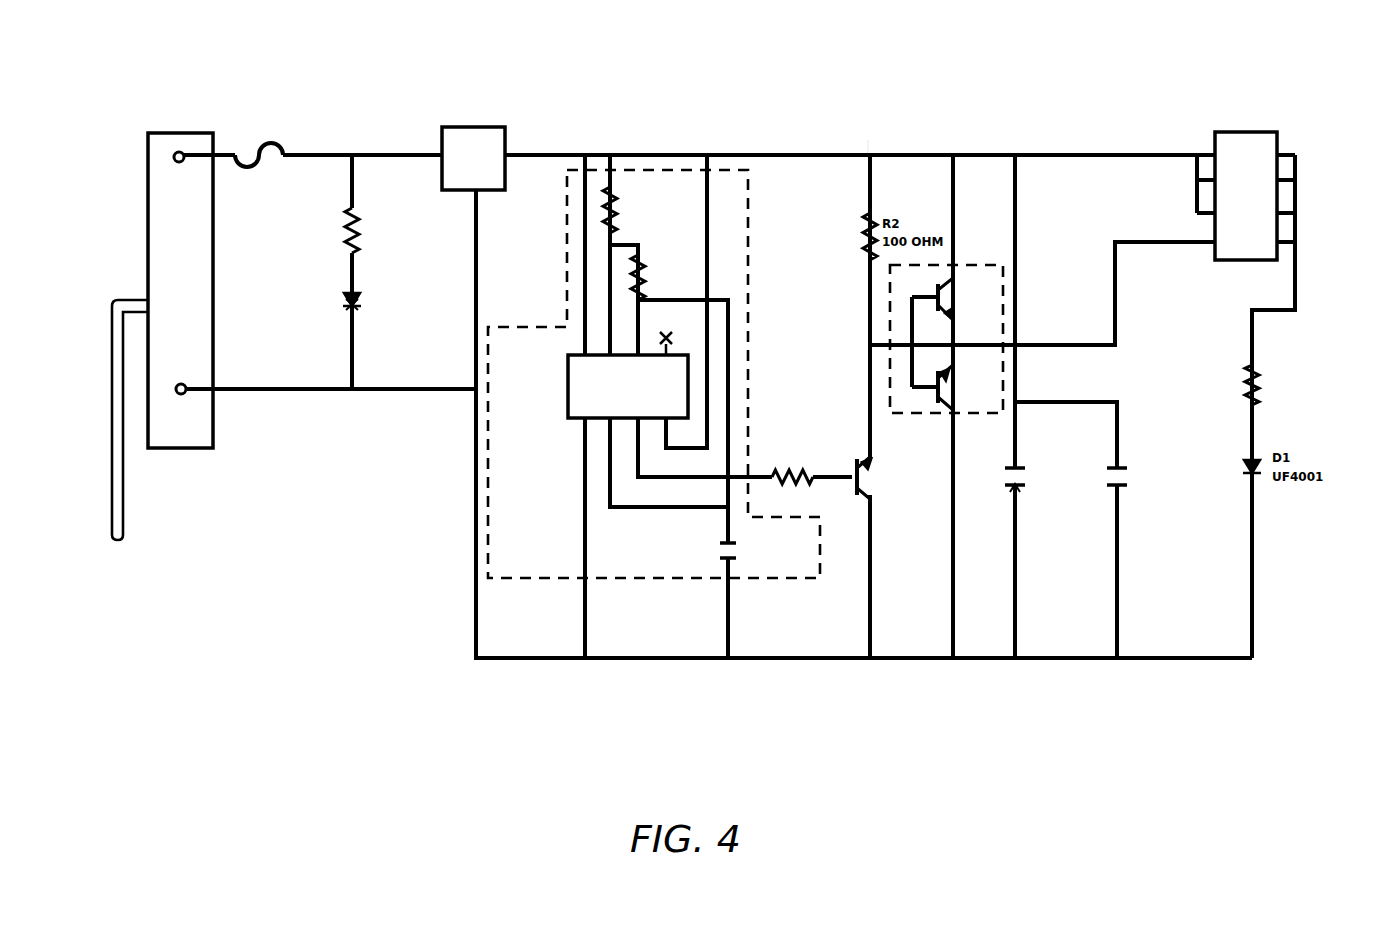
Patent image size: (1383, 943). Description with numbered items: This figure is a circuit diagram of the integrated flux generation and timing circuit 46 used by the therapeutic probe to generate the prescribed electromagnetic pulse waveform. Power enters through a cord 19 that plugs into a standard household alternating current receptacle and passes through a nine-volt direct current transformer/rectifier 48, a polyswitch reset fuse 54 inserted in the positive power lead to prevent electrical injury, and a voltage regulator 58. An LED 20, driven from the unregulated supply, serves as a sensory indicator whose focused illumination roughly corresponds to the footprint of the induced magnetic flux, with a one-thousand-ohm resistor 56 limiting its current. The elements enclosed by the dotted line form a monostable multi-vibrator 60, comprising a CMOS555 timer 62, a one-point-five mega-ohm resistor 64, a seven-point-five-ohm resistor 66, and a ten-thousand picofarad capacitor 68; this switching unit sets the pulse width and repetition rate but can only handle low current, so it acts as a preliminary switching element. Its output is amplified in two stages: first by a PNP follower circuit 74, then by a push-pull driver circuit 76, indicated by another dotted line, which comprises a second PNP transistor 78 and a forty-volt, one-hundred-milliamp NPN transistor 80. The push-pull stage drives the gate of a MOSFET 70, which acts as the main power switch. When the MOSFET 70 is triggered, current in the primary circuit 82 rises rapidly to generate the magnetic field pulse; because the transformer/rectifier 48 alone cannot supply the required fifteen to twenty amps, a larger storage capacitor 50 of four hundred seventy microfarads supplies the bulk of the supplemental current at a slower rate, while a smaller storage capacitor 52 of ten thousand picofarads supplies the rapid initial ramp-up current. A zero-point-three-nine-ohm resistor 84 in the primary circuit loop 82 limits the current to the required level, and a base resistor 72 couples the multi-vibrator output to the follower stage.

The cord 19 is at (120, 485).
The LED 20 is at (345, 305).
The integrated flux generation and timing circuit 46 is at (868, 140).
The transformer/rectifier 48 is at (190, 298).
The storage capacitor 50 is at (1012, 478).
The storage capacitor 52 is at (1112, 480).
The polyswitch reset fuse 54 is at (262, 147).
The resistor 56 is at (345, 220).
The voltage regulator 58 is at (492, 132).
The monostable multi-vibrator 60 is at (505, 578).
The CMOS555 timer 62 is at (575, 395).
The resistor 64 is at (613, 198).
The resistor 66 is at (640, 283).
The capacitor 68 is at (722, 548).
The MOSFET 70 is at (1258, 178).
The resistor 72 is at (797, 472).
The PNP follower circuit 74 is at (860, 478).
The push-pull driver circuit 76 is at (1003, 310).
The PNP transistor 78 is at (950, 398).
The NPN transistor 80 is at (942, 294).
The primary circuit 82 is at (1297, 287).
The resistor 84 is at (1298, 381).